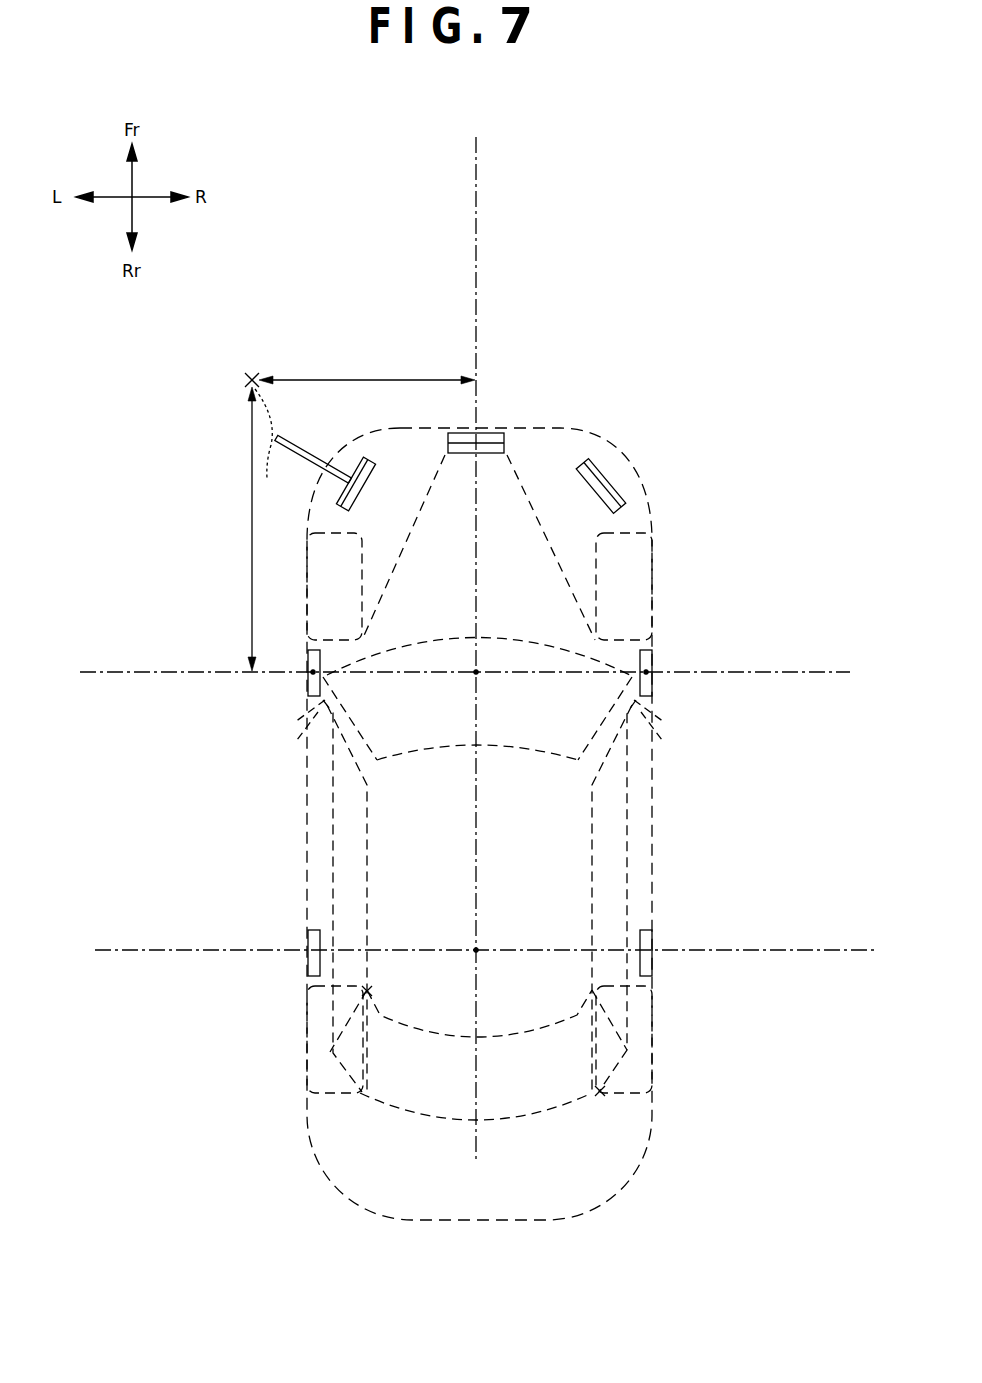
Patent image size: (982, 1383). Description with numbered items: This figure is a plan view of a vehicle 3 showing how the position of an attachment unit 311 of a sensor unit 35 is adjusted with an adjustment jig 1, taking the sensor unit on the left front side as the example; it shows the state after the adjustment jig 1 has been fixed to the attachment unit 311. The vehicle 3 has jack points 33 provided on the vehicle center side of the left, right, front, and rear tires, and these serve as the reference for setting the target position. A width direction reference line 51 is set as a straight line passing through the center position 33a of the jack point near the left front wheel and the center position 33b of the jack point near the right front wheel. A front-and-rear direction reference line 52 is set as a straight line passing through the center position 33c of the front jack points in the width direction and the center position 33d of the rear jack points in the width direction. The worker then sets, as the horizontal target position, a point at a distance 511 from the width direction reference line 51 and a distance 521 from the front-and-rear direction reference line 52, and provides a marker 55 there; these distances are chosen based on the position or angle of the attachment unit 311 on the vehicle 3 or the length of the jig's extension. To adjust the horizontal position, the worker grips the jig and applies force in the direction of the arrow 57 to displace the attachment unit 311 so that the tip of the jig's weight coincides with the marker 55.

The adjustment jig 1 is at (318, 458).
The vehicle 3 is at (690, 576).
The jack points 33 is at (674, 640).
The center position of the jack point near the left front wheel 33a is at (306, 673).
The center position of the jack point near the right front wheel 33b is at (652, 679).
The center position of the front jack points in the width direction 33c is at (474, 675).
The center position of the rear jack points in the width direction 33d is at (474, 948).
The sensor unit 35 is at (488, 432).
The attachment unit 311 is at (368, 462).
The width direction reference line 51 is at (118, 668).
The front-and-rear direction reference line 52 is at (480, 313).
The marker 55 is at (251, 372).
The arrow 57 is at (271, 445).
The distance from the width direction reference line 511 is at (228, 529).
The distance from the front-and-rear direction reference line 521 is at (367, 370).